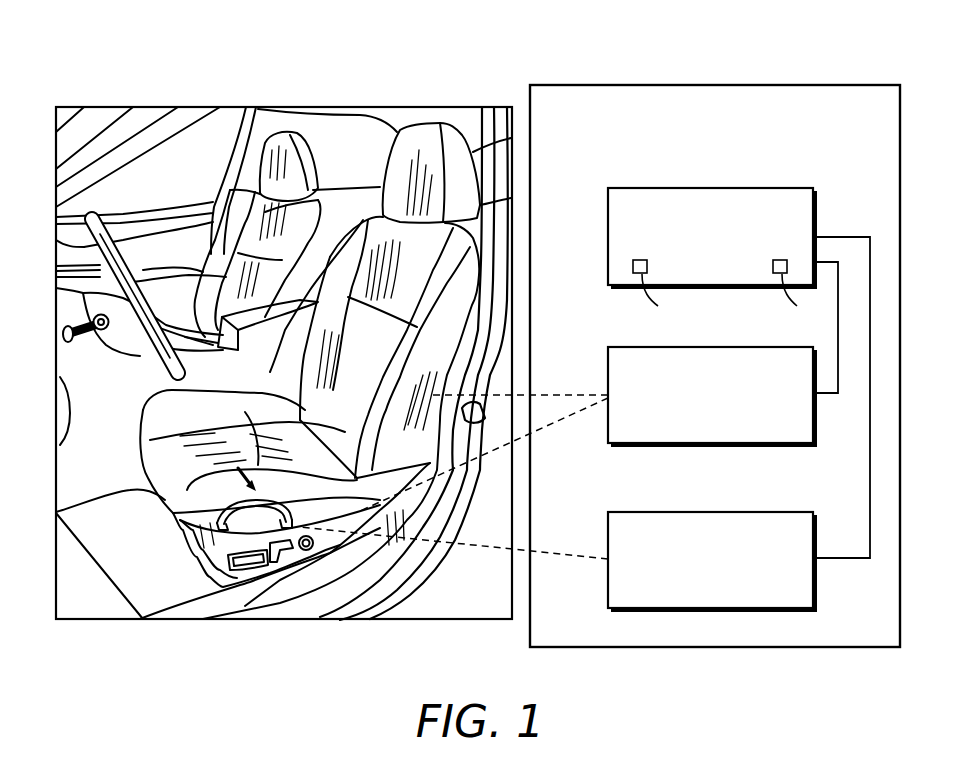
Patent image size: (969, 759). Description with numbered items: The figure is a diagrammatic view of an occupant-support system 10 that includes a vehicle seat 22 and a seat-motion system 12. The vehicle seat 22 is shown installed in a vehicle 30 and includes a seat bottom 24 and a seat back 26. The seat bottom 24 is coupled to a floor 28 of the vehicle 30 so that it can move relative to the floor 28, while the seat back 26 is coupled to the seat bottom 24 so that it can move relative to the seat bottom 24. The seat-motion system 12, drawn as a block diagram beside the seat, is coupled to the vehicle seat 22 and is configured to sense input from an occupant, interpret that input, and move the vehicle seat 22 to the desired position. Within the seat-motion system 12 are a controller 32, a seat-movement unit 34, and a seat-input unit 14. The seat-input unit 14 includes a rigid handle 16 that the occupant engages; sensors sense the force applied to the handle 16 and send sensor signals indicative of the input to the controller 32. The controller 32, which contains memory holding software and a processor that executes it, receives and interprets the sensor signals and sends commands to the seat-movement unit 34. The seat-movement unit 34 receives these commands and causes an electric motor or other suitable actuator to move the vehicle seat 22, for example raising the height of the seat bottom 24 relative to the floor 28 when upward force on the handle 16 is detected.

The occupant-support system 10 is at (440, 76).
The seat-motion system 12 is at (665, 78).
The seat-input unit 14 is at (757, 512).
The handle 16 is at (299, 423).
The vehicle seat 22 is at (343, 190).
The seat bottom 24 is at (168, 530).
The seat back 26 is at (296, 275).
The floor 28 is at (97, 598).
The vehicle 30 is at (436, 612).
The controller 32 is at (757, 188).
The seat-movement unit 34 is at (640, 347).